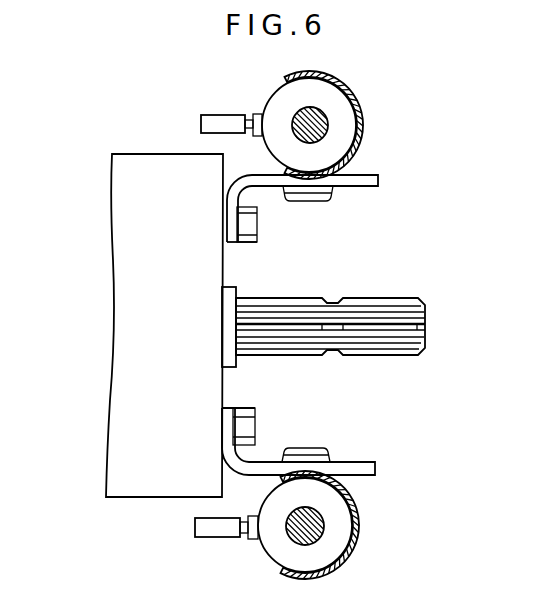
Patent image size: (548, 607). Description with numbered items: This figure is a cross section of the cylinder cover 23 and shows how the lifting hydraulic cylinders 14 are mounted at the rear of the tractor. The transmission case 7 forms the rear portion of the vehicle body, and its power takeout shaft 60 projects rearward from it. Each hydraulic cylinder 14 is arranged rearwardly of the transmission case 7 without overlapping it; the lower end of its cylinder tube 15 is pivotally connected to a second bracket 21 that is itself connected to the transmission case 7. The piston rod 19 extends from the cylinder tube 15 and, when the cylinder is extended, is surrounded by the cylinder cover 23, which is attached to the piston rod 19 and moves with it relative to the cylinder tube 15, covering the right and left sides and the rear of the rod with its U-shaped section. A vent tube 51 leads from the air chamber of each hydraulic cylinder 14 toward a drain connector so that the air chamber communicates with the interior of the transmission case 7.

The transmission case 7 is at (142, 210).
The hydraulic cylinder 14 is at (267, 95).
The cylinder tube 15 is at (276, 163).
The piston rod 19 is at (328, 130).
The second bracket 21 is at (367, 186).
The cylinder cover 23 is at (360, 102).
The vent tube 51 is at (220, 127).
The power takeout shaft 60 is at (404, 355).